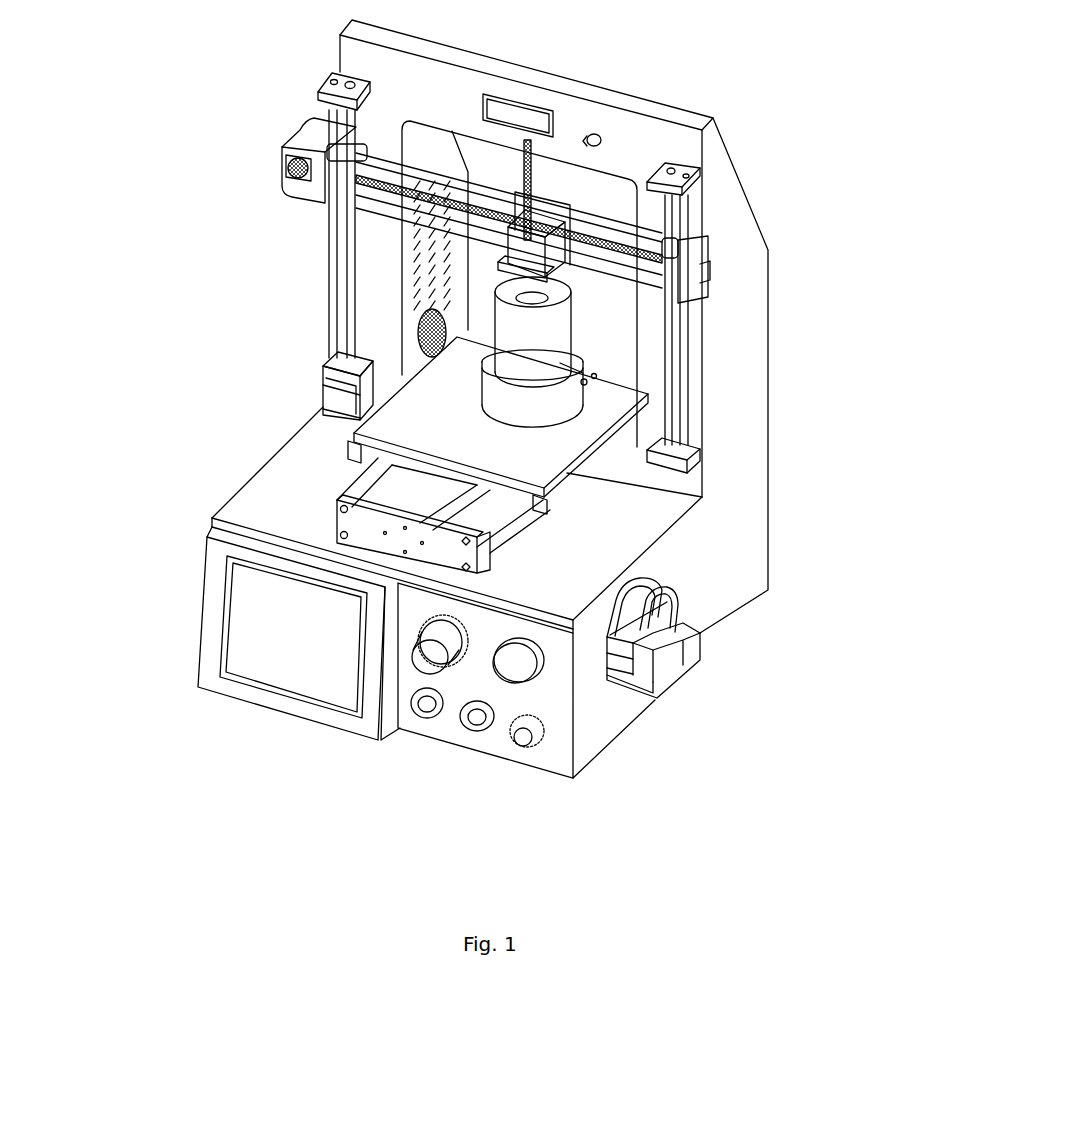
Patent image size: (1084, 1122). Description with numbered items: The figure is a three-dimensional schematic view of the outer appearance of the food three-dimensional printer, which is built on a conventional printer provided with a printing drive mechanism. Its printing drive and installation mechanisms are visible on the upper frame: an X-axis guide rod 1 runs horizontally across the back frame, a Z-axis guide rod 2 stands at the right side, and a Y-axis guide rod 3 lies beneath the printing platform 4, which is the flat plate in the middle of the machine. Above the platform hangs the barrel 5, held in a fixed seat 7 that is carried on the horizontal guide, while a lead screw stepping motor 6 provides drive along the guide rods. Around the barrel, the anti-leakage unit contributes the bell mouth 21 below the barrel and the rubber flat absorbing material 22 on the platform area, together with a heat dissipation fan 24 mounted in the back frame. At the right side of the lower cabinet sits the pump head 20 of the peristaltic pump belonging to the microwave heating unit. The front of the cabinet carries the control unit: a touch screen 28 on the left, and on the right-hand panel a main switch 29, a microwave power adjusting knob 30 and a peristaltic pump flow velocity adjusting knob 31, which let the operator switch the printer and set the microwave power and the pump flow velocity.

The X-axis guide rod 1 is at (585, 211).
The Z-axis guide rod 2 is at (704, 348).
The Y-axis guide rod 3 is at (495, 520).
The printing platform 4 is at (420, 407).
The barrel 5 is at (543, 335).
The lead screw stepping motor 6 is at (618, 217).
The fixed seat 7 is at (577, 203).
The pump head 20 is at (675, 643).
The bell mouth 21 is at (545, 403).
The rubber flat absorbing material 22 is at (448, 437).
The heat dissipation fan 24 is at (427, 330).
The touch screen 28 is at (285, 627).
The main switch 29 is at (507, 665).
The microwave power adjusting knob 30 is at (433, 655).
The peristaltic pump flow velocity adjusting knob 31 is at (520, 740).